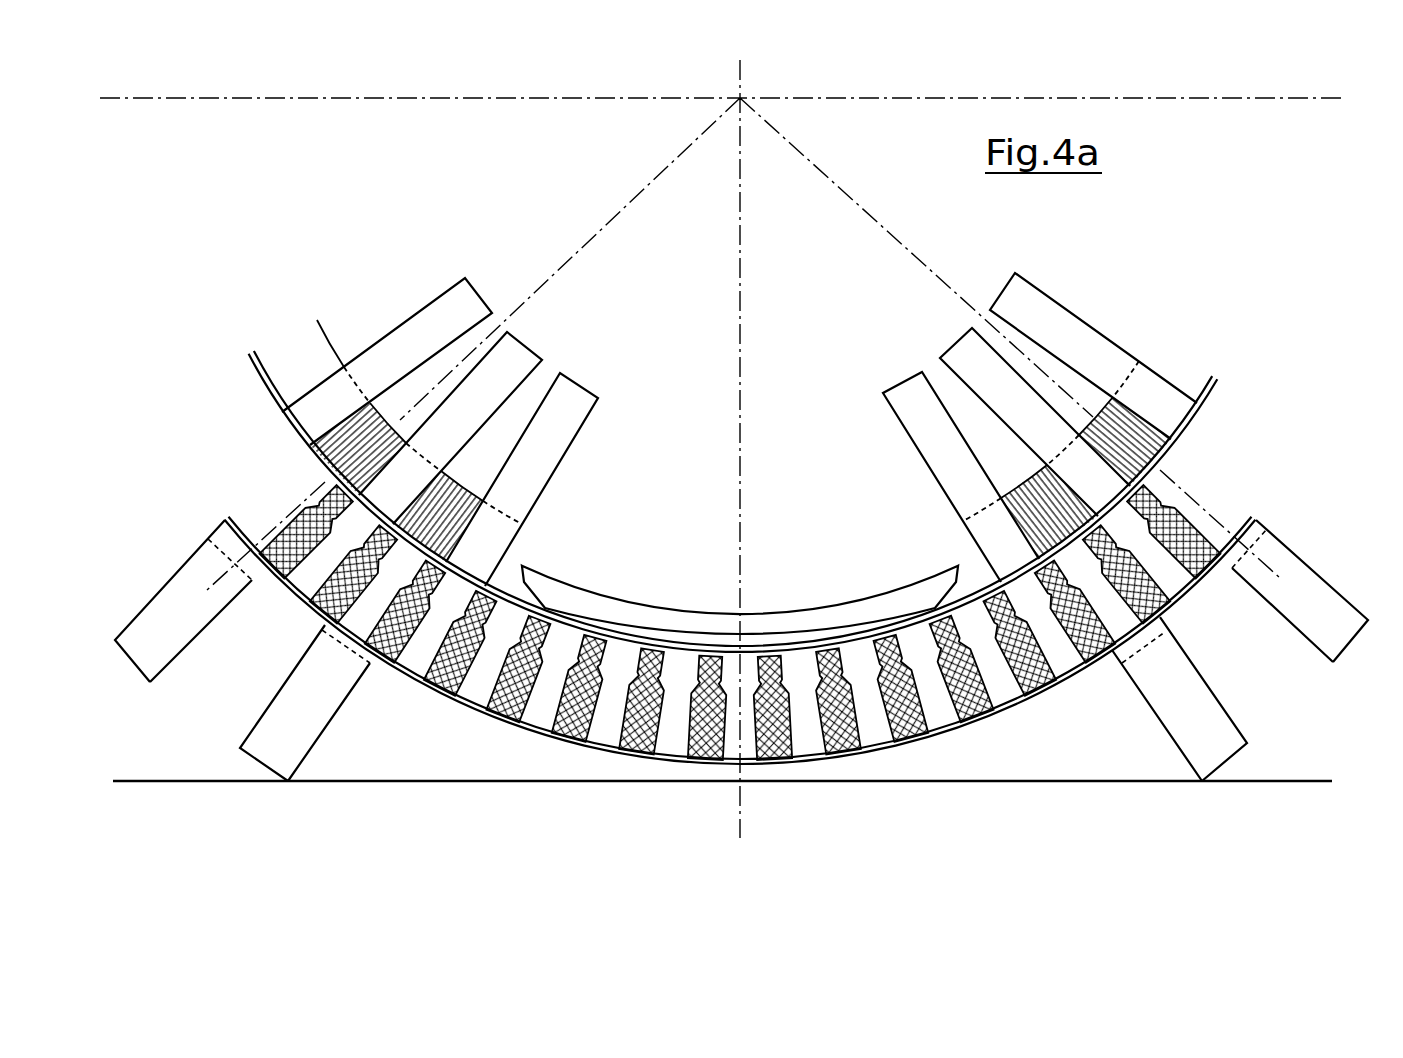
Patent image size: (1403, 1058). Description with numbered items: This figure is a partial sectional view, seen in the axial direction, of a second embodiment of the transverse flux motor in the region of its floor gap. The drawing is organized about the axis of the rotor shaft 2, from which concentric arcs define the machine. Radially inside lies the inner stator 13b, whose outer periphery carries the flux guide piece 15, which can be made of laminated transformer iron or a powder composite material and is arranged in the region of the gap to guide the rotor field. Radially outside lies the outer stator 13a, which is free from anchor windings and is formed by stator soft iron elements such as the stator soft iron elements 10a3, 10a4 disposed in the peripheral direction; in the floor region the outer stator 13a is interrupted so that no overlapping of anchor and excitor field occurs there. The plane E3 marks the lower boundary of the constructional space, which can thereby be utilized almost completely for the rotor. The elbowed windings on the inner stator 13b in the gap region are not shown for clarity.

The rotor shaft 2 is at (1227, 466).
The outer stator 13a is at (1292, 538).
The inner stator 13b is at (1136, 340).
The flux guide piece 15 is at (644, 616).
The stator soft iron element 10a3 is at (1146, 700).
The stator soft iron element 10a4 is at (332, 723).
The plane E3 is at (1275, 781).